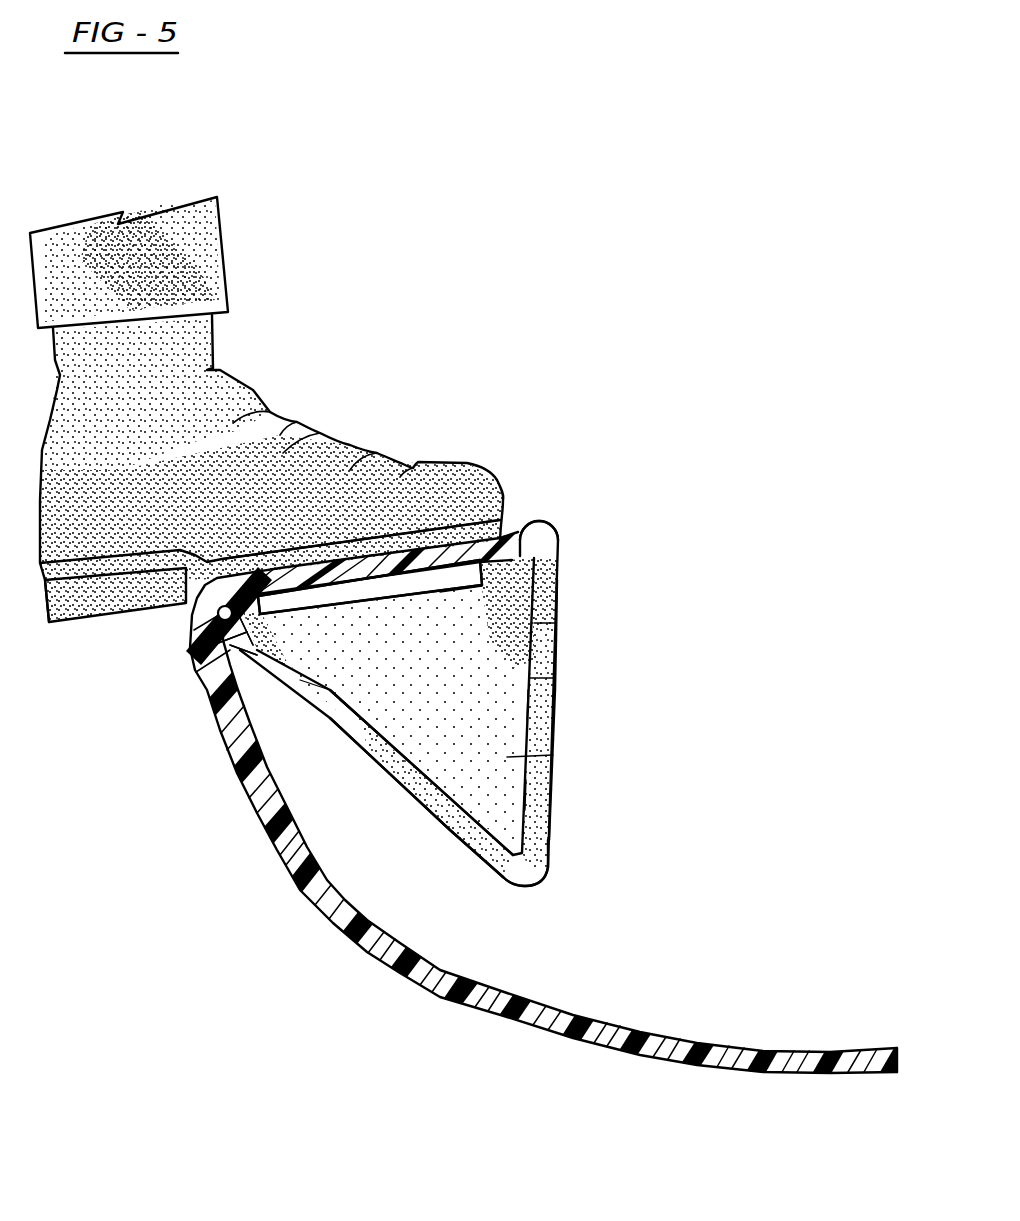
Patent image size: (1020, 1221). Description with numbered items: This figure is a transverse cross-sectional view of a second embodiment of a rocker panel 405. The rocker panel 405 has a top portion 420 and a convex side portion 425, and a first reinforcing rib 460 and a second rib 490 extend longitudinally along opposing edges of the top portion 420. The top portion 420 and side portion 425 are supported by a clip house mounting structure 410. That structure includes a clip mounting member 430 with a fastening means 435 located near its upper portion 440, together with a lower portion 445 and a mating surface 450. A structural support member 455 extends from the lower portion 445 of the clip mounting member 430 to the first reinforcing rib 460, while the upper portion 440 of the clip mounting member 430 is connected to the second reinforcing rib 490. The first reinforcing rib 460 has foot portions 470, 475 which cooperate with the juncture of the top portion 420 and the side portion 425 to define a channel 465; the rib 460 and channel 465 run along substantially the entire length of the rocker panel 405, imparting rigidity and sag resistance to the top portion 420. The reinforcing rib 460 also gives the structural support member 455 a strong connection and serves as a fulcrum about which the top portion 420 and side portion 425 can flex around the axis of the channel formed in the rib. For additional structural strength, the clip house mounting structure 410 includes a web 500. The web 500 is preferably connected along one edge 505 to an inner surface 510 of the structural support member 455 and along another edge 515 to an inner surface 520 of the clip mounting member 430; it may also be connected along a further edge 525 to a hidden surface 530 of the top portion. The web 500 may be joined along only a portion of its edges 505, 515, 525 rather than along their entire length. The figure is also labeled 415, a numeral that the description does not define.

The rocker panel 405 is at (476, 703).
The clip house mounting structure 410 is at (601, 765).
The shoe 415 is at (266, 409).
The top portion 420 is at (398, 508).
The convex side portion 425 is at (513, 802).
The clip mounting member 430 is at (606, 715).
The fastening means 435 is at (616, 665).
The upper portion 440 is at (610, 610).
The lower portion 445 is at (584, 859).
The mating surface 450 is at (604, 815).
The structural support member 455 is at (421, 783).
The first reinforcing rib 460 is at (179, 674).
The channel 465 is at (176, 642).
The foot portion 470 is at (169, 627).
The foot portion 475 is at (197, 704).
The second reinforcing rib 490 is at (563, 516).
The web 500 is at (487, 784).
The edge 505 is at (363, 671).
The inner surface 510 is at (393, 709).
The edge 515 is at (491, 697).
The inner surface 520 is at (492, 764).
The edge 525 is at (472, 617).
The hidden surface 530 is at (368, 603).